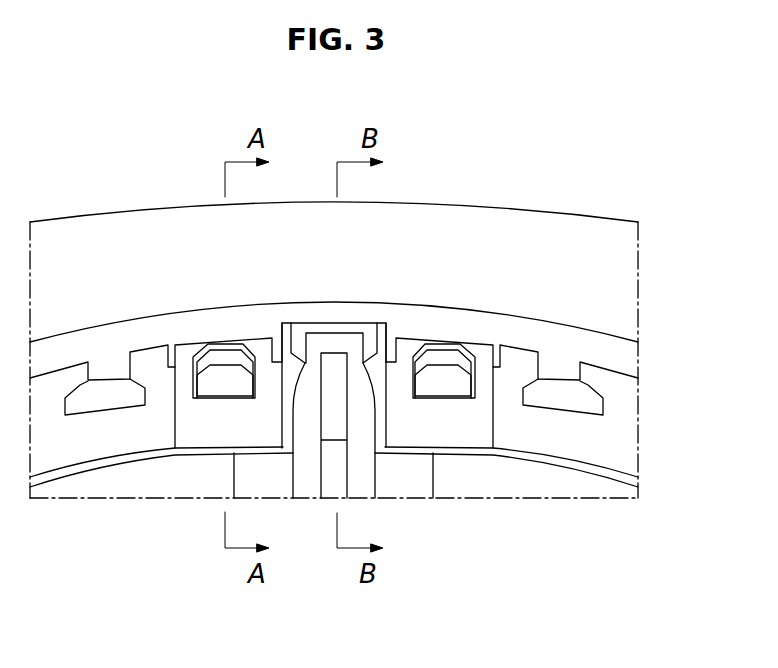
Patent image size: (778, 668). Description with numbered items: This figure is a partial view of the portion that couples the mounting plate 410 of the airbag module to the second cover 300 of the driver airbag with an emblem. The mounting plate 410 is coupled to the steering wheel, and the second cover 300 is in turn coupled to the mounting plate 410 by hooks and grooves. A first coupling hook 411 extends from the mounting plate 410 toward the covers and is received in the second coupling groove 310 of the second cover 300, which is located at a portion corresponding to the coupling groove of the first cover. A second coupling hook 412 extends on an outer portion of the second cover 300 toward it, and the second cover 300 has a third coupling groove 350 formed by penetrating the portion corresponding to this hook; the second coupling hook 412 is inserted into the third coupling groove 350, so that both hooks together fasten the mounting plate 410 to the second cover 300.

The second cover 300 is at (546, 248).
The second coupling groove 310 is at (217, 353).
The third coupling groove 350 is at (366, 328).
The mounting plate 410 is at (527, 480).
The first coupling hook 411 is at (213, 386).
The second coupling hook 412 is at (308, 480).